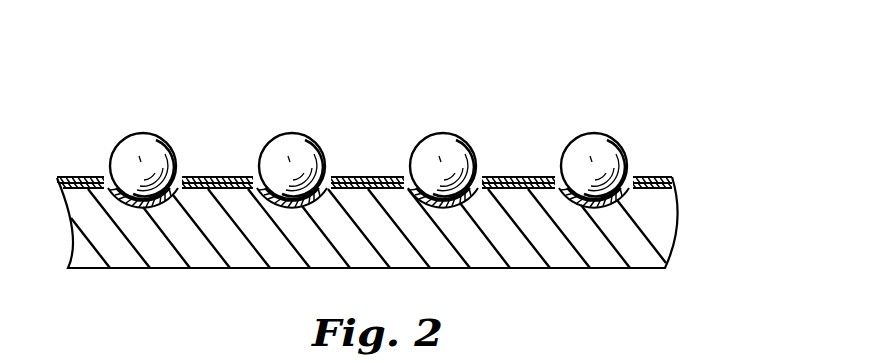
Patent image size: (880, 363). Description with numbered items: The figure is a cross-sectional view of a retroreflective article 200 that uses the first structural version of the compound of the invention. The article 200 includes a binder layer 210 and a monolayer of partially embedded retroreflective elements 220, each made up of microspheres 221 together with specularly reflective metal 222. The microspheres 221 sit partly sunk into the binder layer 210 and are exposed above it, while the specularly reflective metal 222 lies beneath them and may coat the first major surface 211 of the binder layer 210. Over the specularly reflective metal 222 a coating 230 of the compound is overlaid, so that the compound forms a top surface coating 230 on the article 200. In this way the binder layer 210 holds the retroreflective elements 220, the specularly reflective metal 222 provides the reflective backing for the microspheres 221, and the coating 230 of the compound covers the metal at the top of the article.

The retroreflective article 200 is at (458, 88).
The binder layer 210 is at (665, 242).
The first major surface 211 is at (86, 175).
The retroreflective elements 220 is at (407, 152).
The microspheres 221 is at (262, 167).
The specularly reflective metal 222 is at (382, 187).
The coating 230 is at (517, 177).